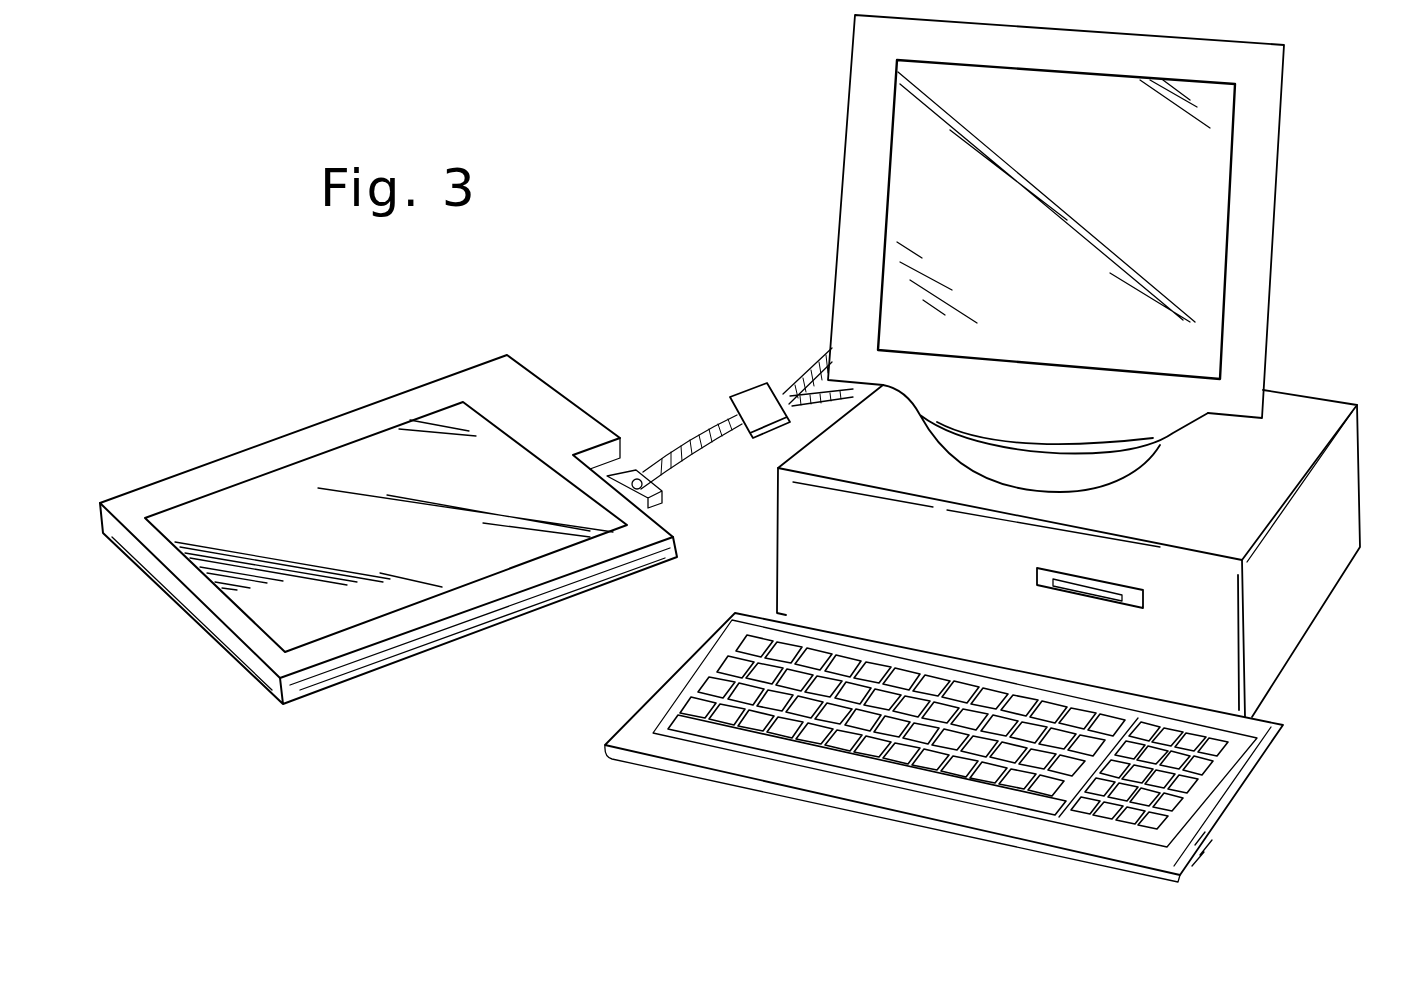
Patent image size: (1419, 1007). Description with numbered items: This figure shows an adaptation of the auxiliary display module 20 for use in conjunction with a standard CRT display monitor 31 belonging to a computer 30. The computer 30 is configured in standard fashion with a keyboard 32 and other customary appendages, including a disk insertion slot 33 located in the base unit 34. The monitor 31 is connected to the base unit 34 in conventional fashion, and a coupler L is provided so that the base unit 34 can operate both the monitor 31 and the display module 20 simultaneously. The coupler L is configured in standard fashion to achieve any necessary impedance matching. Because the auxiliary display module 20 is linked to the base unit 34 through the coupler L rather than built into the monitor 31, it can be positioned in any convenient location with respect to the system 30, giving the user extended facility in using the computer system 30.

The auxiliary display module 20 is at (355, 393).
The computer 30 is at (1388, 328).
The CRT display monitor 31 is at (1200, 227).
The keyboard 32 is at (900, 736).
The disk insertion slot 33 is at (1075, 594).
The base unit 34 is at (1292, 608).
The coupler L is at (752, 388).